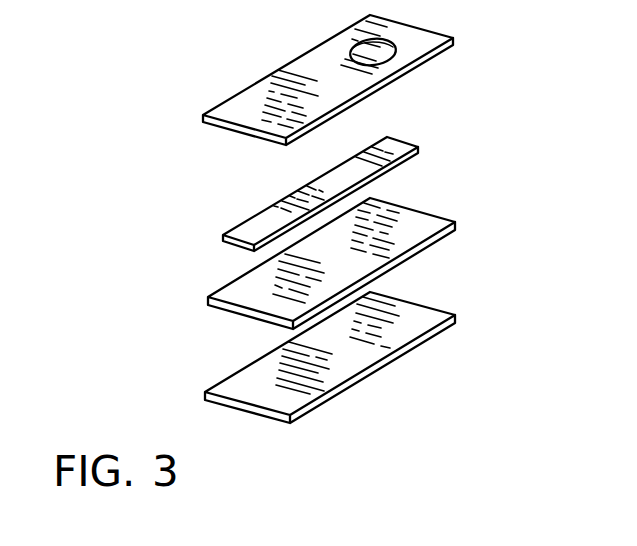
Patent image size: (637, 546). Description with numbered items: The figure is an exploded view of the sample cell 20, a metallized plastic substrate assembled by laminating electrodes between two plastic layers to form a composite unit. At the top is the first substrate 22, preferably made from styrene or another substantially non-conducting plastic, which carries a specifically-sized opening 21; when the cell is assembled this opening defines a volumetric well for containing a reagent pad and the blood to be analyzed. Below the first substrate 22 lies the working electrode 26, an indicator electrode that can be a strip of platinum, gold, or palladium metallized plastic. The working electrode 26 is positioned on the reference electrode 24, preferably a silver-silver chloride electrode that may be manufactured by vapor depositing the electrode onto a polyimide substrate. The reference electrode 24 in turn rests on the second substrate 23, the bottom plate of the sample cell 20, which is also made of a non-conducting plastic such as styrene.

The sample cell 20 is at (320, 211).
The opening 21 is at (357, 45).
The first substrate 22 is at (345, 72).
The second substrate 23 is at (378, 337).
The reference electrode 24 is at (388, 233).
The working electrode 26 is at (397, 160).